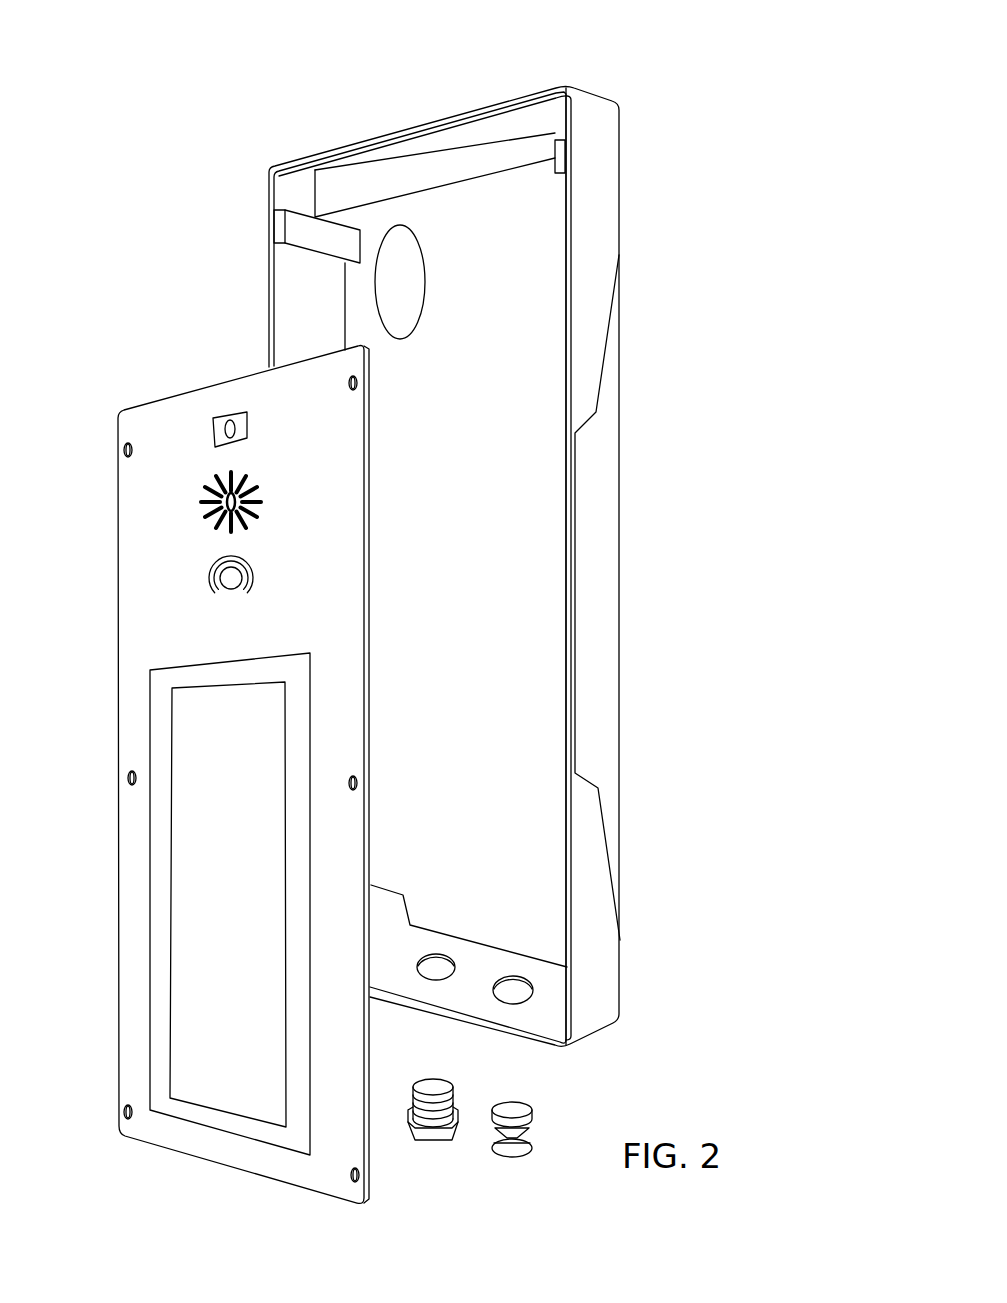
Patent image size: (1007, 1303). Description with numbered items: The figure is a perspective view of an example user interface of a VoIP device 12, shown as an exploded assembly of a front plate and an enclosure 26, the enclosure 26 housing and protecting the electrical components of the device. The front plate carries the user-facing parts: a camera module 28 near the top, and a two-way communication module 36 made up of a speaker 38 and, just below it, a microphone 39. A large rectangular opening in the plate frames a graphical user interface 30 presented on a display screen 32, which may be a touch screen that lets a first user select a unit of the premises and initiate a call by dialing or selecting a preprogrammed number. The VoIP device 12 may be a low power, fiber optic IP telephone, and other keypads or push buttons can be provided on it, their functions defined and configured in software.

The VoIP device 12 is at (700, 178).
The enclosure 26 is at (268, 262).
The camera module 28 is at (212, 430).
The graphical user interface 30 is at (148, 668).
The display screen 32 is at (170, 1082).
The two-way communication module 36 is at (161, 567).
The speaker 38 is at (212, 500).
The microphone 39 is at (232, 590).